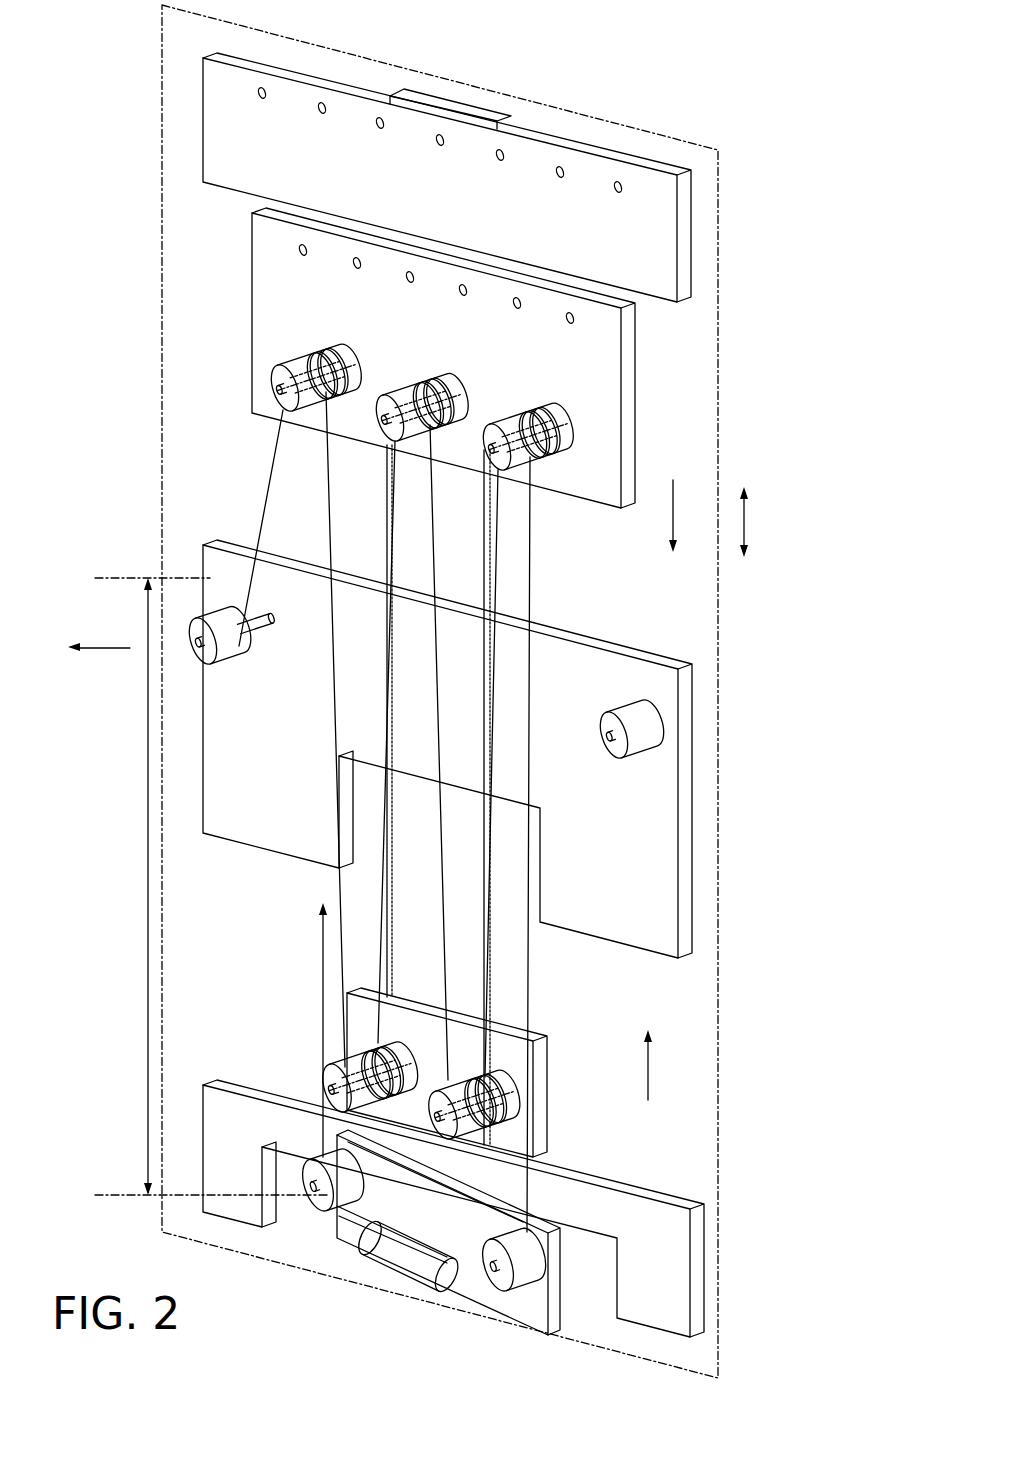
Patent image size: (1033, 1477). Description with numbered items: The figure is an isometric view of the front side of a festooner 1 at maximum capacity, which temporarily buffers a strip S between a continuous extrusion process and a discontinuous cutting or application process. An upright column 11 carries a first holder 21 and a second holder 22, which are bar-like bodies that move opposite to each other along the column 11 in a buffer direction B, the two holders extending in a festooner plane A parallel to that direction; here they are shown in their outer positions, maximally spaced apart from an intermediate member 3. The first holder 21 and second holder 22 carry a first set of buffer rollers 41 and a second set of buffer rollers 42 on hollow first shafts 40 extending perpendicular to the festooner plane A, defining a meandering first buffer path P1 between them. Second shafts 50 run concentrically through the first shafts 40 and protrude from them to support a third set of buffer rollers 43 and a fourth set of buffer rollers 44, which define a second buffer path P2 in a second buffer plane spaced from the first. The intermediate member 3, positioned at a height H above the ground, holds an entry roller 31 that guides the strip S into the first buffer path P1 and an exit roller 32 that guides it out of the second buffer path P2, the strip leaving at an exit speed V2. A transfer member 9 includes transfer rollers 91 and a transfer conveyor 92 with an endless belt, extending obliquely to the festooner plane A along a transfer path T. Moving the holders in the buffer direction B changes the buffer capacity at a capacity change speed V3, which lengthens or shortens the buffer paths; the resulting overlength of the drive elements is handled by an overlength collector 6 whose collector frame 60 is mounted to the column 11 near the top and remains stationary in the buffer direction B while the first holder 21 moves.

The festooner 1 is at (118, 115).
The overlength collector 6 is at (738, 180).
The collector frame 60 is at (653, 187).
The first holder 21 is at (258, 298).
The second holder 22 is at (348, 1037).
The intermediate member 3 is at (228, 823).
The column 11 is at (407, 527).
The entry roller 31 is at (656, 718).
The exit roller 32 is at (200, 617).
The first shaft 40 is at (332, 358).
The first set of buffer rollers 41 is at (557, 397).
The third set of buffer rollers 43 is at (282, 379).
The second shaft 50 is at (281, 391).
The second set of buffer rollers 42 is at (490, 1080).
The fourth set of buffer rollers 44 is at (325, 1075).
The transfer member 9 is at (316, 1294).
The transfer rollers 91 is at (316, 1200).
The transfer conveyor 92 is at (400, 1260).
The strip S is at (266, 497).
The first buffer path P1 is at (318, 940).
The second buffer path P2 is at (326, 537).
The transfer path T is at (370, 1215).
The height H is at (212, 886).
The exit speed V2 is at (99, 665).
The capacity change speed V3 is at (662, 792).
The festooner plane A is at (716, 478).
The buffer direction B is at (759, 522).